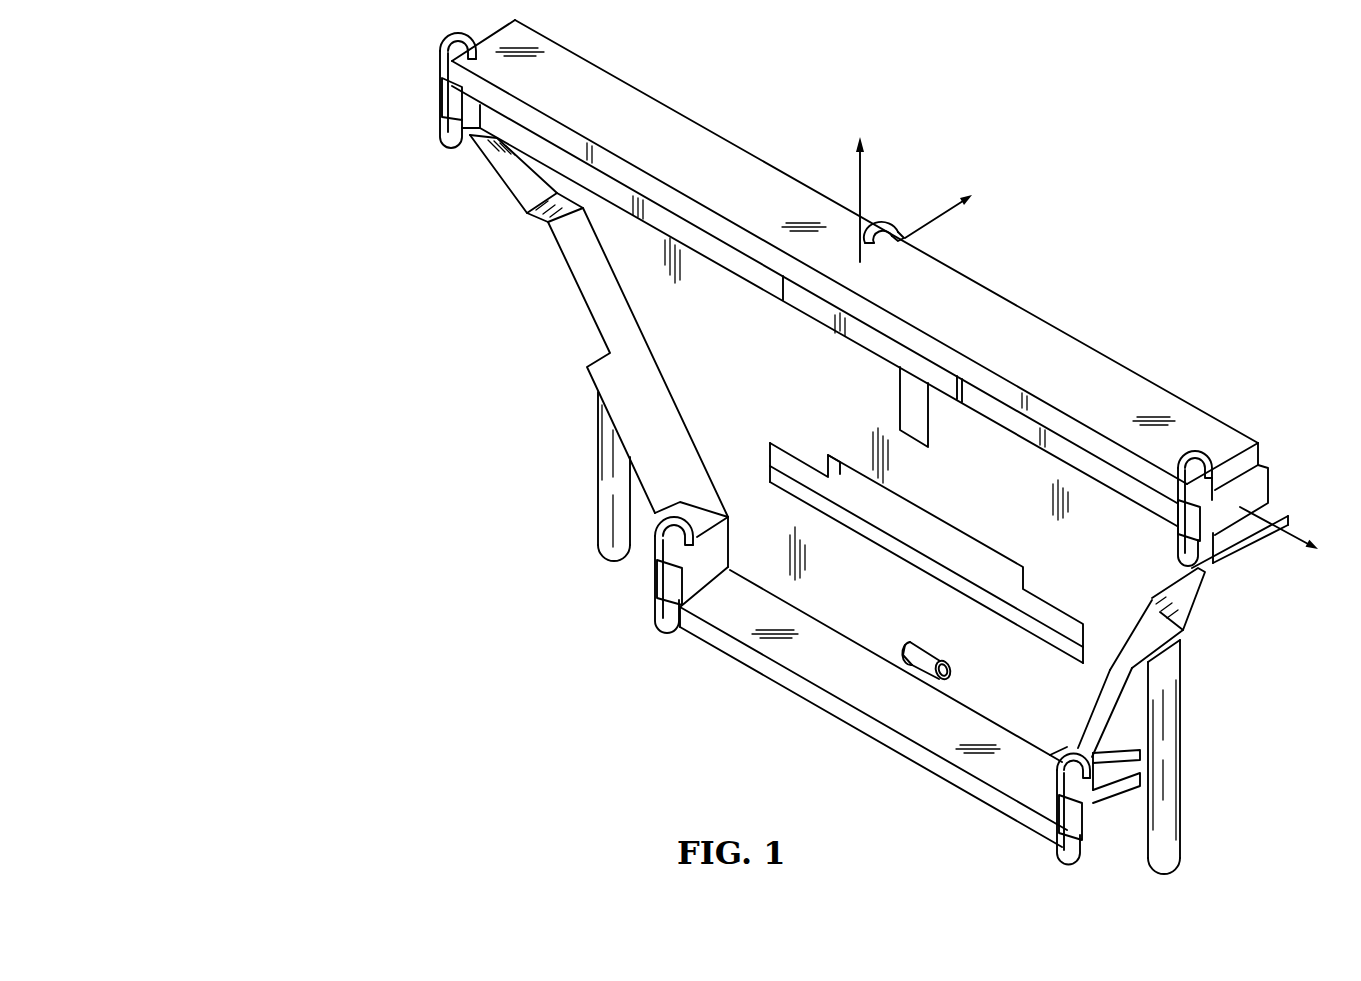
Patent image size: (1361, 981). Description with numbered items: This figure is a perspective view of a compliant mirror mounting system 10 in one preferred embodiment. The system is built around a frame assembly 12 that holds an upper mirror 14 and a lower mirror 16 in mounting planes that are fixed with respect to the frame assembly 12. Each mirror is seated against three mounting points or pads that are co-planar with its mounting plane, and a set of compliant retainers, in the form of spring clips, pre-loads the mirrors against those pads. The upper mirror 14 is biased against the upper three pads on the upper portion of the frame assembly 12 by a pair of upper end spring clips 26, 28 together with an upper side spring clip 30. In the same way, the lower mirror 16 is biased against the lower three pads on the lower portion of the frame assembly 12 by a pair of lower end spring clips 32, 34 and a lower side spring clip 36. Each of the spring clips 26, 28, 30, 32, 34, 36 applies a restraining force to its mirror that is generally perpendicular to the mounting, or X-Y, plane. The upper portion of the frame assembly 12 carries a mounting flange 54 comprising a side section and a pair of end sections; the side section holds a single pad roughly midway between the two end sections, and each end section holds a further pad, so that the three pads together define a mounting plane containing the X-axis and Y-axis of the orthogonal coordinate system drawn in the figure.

The compliant mirror mounting system 10 is at (320, 94).
The frame assembly 12 is at (543, 272).
The upper mirror 14 is at (693, 112).
The lower mirror 16 is at (806, 705).
The upper end spring clip 26 is at (448, 150).
The upper end spring clip 28 is at (1271, 482).
The upper side spring clip 30 is at (890, 214).
The lower end spring clip 32 is at (665, 636).
The lower end spring clip 34 is at (1058, 855).
The lower side spring clip 36 is at (946, 678).
The mounting flange 54 is at (734, 282).